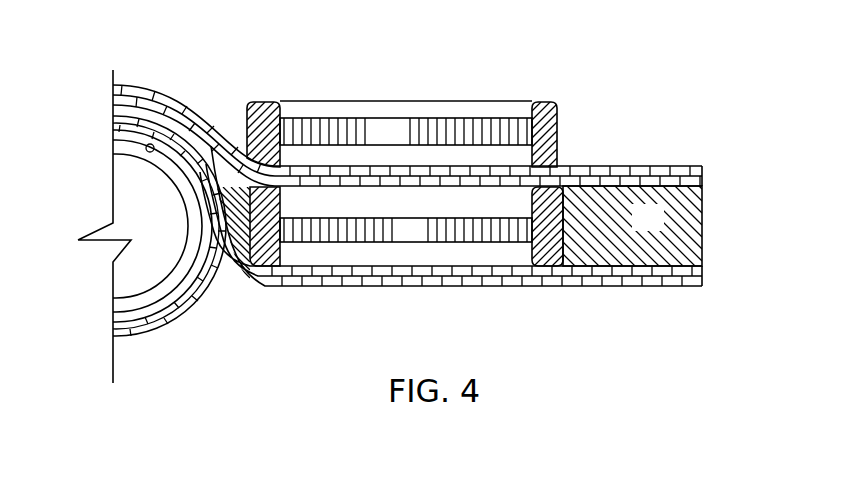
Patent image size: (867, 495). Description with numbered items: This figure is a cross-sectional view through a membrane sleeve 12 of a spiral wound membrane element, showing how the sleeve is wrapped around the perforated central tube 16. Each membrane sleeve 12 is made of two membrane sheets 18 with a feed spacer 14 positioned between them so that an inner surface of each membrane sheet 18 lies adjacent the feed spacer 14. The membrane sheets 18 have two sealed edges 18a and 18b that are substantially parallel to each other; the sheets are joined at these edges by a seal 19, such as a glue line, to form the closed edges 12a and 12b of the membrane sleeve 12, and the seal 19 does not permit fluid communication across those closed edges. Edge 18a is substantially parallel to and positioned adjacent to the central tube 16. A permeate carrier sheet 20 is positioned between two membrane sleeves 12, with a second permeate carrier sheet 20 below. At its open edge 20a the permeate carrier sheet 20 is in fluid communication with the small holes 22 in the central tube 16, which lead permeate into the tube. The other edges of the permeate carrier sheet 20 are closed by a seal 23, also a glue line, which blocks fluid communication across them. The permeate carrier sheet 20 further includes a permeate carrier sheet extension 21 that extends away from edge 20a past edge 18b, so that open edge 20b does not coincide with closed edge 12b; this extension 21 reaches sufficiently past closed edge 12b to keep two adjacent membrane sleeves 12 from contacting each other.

The membrane sleeve 12 is at (403, 84).
The closed edge 12a is at (268, 101).
The closed edge 12b is at (531, 100).
The feed spacer 14 is at (400, 142).
The central tube 16 is at (131, 140).
The membrane sheet 18 is at (327, 152).
The sealed edge 18a is at (267, 265).
The sealed edge 18b is at (552, 186).
The seal 19 is at (262, 105).
The permeate carrier sheet 20 is at (410, 178).
The open edge 20a is at (195, 172).
The open edge 20b is at (702, 166).
The permeate carrier sheet extension 21 is at (650, 166).
The holes 22 is at (168, 124).
The seal 23 is at (662, 229).